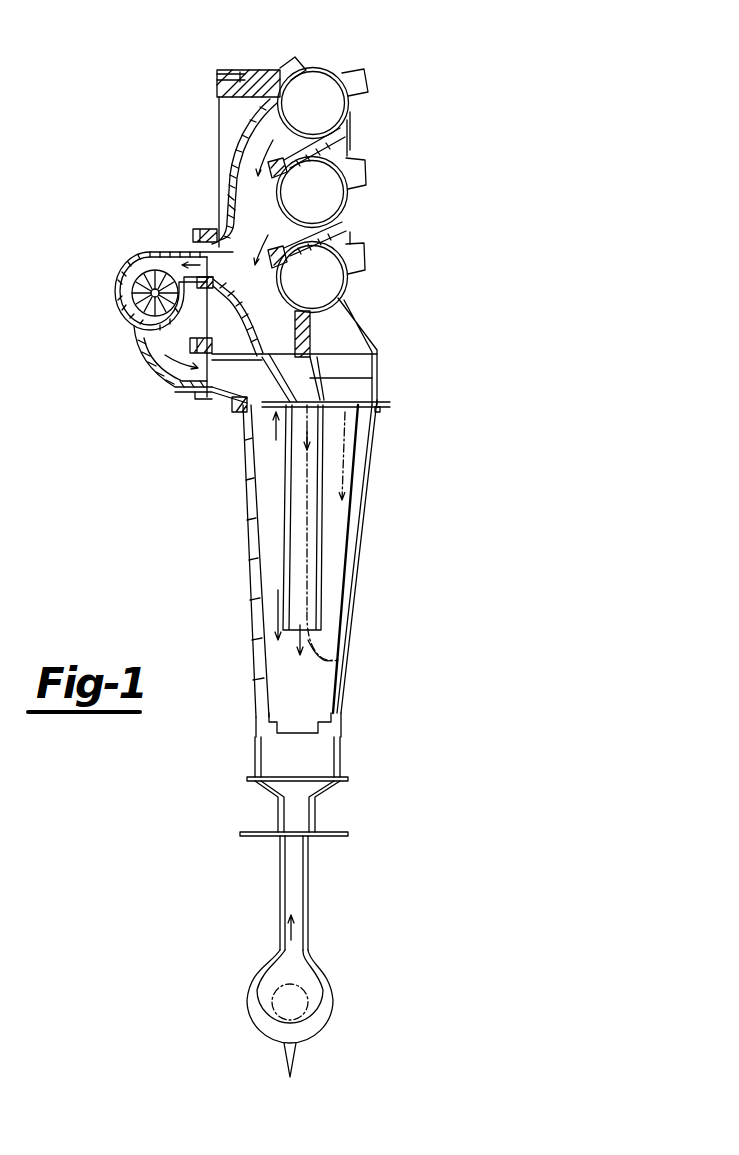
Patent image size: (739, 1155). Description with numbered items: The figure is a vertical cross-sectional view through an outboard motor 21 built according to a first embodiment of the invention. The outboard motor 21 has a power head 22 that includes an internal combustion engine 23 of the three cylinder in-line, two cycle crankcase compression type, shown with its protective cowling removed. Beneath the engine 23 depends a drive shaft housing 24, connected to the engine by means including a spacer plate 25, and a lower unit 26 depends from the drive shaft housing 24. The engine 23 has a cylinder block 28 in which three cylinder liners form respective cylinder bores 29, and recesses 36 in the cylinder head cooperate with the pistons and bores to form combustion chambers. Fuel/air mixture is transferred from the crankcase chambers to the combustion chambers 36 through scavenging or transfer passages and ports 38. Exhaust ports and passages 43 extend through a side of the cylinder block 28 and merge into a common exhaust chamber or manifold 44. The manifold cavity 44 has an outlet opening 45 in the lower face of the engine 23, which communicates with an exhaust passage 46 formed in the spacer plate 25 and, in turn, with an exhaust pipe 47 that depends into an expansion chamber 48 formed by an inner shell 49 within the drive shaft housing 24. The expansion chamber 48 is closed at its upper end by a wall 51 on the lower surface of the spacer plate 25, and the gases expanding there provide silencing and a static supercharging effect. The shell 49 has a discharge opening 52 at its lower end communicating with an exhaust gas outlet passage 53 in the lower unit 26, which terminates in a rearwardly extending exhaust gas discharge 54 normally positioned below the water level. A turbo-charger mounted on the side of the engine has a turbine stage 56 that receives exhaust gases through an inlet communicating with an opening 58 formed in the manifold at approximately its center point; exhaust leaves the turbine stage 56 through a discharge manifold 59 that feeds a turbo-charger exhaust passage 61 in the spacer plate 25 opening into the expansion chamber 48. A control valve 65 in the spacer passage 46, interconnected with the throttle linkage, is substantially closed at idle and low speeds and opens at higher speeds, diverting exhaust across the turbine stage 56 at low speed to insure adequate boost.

The outboard motor 21 is at (238, 329).
The power head 22 is at (306, 184).
The internal combustion engine 23 is at (217, 148).
The drive shaft housing 24 is at (295, 568).
The spacer plate 25 is at (365, 355).
The lower unit 26 is at (309, 907).
The cylinder block 28 is at (347, 112).
The cylinder bores 29 is at (363, 162).
The recesses (combustion chambers) 36 is at (320, 100).
The scavenging or transfer passages and ports 38 is at (284, 66).
The exhaust ports and passages 43 is at (275, 118).
The exhaust chamber or manifold 44 is at (245, 208).
The outlet opening 45 is at (150, 377).
The exhaust passage 46 is at (310, 400).
The exhaust pipe 47 is at (322, 533).
The expansion chamber 48 is at (330, 590).
The inner shell 49 is at (252, 462).
The wall 51 is at (158, 254).
The discharge opening 52 is at (318, 718).
The exhaust gas outlet passage 53 is at (292, 898).
The exhaust gas discharge 54 is at (310, 1000).
The turbine stage 56 is at (150, 292).
The opening 58 is at (215, 250).
The discharge manifold 59 is at (178, 398).
The turbo-charger exhaust passage 61 is at (228, 405).
The control valve 65 is at (370, 382).